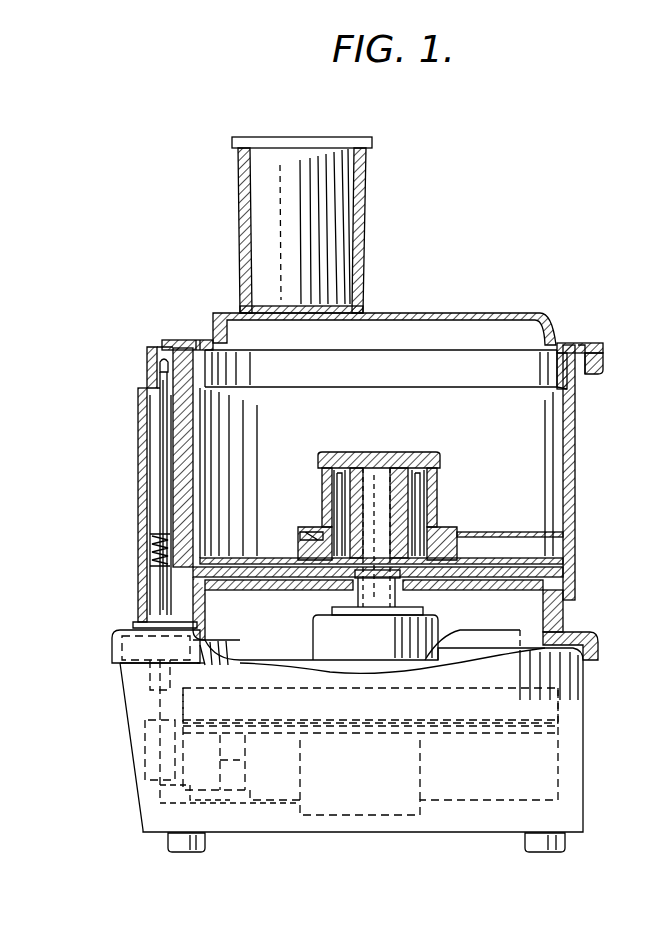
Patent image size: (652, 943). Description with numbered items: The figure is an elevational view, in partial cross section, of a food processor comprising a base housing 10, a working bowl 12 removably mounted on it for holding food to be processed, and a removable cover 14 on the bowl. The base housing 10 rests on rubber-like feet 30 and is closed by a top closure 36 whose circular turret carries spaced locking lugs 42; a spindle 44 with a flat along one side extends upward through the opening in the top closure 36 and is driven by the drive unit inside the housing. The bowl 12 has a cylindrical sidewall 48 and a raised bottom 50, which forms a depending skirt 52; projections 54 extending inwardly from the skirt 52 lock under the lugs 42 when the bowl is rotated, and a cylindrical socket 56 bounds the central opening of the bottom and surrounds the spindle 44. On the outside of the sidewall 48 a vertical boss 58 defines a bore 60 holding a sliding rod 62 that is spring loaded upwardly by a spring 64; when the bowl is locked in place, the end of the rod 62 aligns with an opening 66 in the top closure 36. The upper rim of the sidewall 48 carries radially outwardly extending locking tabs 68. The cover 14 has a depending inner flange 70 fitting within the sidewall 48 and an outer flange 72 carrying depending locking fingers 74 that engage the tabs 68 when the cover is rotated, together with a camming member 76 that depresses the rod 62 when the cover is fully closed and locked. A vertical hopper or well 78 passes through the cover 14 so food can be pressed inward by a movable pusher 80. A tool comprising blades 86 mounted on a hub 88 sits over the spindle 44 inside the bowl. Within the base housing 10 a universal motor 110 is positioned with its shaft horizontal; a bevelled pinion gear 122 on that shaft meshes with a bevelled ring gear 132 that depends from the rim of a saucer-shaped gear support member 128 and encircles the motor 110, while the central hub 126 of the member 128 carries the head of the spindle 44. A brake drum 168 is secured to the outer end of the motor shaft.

The base housing 10 is at (324, 715).
The working bowl 12 is at (97, 493).
The cover 14 is at (500, 287).
The feet 30 is at (168, 843).
The top closure 36 is at (118, 632).
The locking lugs 42 is at (572, 590).
The spindle 44 is at (363, 497).
The cylindrical sidewall 48 is at (577, 480).
The raised bottom 50 is at (513, 572).
The depending skirt 52 is at (573, 605).
The projections 54 is at (575, 624).
The cylindrical socket 56 is at (430, 490).
The vertical boss 58 is at (137, 452).
The bore 60 is at (158, 513).
The sliding rod 62 is at (162, 418).
The spring 64 is at (152, 557).
The opening 66 is at (118, 663).
The locking tabs 68 is at (604, 357).
The inner flange 70 is at (560, 398).
The outer flange 72 is at (598, 343).
The locking fingers 74 is at (583, 378).
The camming member 76 is at (147, 358).
The hopper or well 78 is at (365, 244).
The pusher 80 is at (338, 212).
The blades 86 is at (265, 558).
The hub 88 is at (383, 503).
The universal motor 110 is at (340, 725).
The bevelled pinion gear 122 is at (160, 803).
The central hub 126 is at (438, 625).
The gear support member 128 is at (241, 662).
The bevelled ring gear 132 is at (560, 737).
The brake drum 168 is at (160, 786).